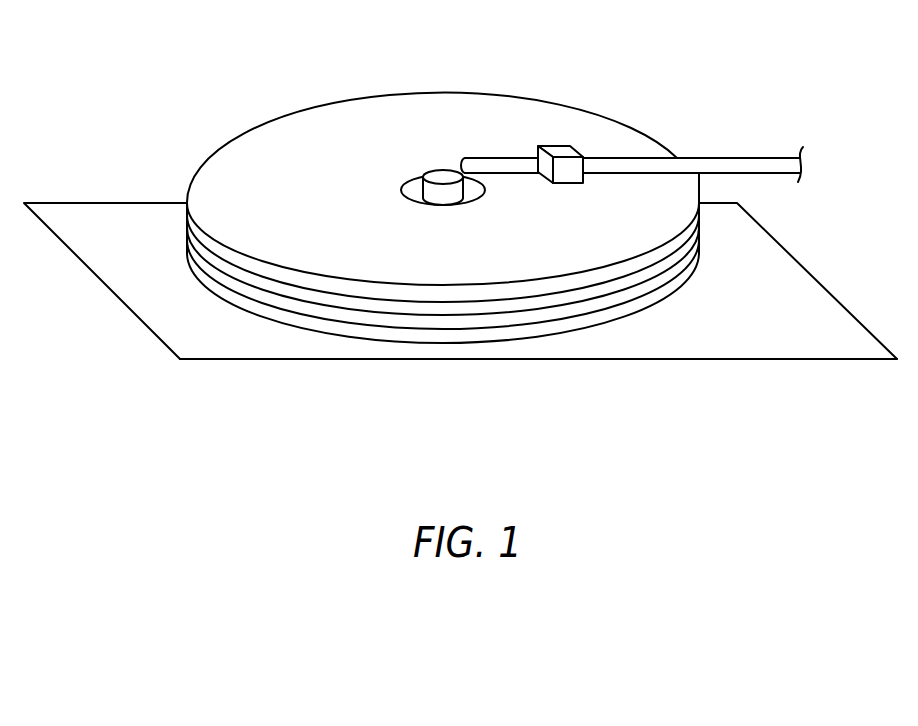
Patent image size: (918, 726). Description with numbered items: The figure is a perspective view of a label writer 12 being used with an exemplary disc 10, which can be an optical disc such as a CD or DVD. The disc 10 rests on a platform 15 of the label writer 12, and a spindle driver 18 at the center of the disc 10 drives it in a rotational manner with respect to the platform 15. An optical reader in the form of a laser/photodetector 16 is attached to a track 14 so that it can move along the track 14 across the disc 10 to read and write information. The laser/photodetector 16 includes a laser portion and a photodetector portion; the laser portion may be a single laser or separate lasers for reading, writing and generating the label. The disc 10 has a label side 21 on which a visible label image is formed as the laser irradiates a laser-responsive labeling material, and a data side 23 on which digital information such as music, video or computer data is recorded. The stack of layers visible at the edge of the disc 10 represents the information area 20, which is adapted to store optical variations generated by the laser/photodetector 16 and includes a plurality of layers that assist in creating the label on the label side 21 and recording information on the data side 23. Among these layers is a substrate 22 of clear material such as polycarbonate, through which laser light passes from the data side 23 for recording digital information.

The disc 10 is at (386, 210).
The label writer 12 is at (460, 320).
The track 14 is at (752, 163).
The platform 15 is at (494, 360).
The laser/photodetector 16 is at (560, 146).
The spindle driver 18 is at (440, 175).
The information area 20 is at (175, 168).
The label side 21 is at (245, 152).
The substrate 22 is at (222, 288).
The data side 23 is at (303, 325).